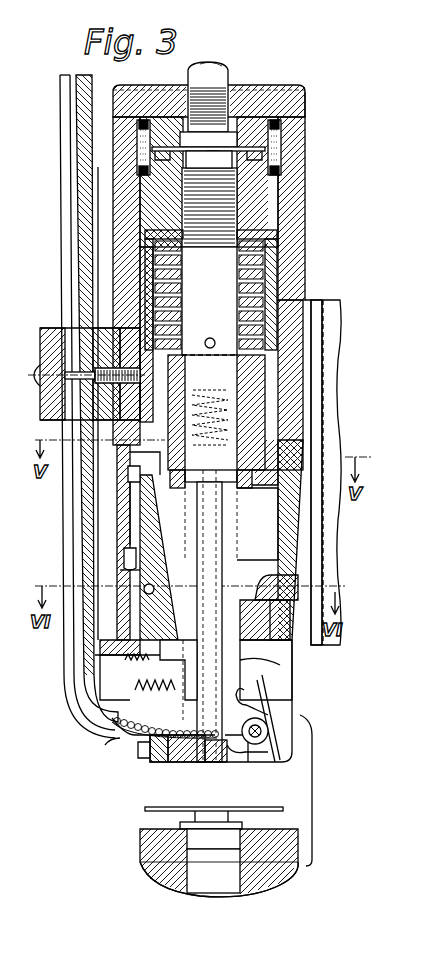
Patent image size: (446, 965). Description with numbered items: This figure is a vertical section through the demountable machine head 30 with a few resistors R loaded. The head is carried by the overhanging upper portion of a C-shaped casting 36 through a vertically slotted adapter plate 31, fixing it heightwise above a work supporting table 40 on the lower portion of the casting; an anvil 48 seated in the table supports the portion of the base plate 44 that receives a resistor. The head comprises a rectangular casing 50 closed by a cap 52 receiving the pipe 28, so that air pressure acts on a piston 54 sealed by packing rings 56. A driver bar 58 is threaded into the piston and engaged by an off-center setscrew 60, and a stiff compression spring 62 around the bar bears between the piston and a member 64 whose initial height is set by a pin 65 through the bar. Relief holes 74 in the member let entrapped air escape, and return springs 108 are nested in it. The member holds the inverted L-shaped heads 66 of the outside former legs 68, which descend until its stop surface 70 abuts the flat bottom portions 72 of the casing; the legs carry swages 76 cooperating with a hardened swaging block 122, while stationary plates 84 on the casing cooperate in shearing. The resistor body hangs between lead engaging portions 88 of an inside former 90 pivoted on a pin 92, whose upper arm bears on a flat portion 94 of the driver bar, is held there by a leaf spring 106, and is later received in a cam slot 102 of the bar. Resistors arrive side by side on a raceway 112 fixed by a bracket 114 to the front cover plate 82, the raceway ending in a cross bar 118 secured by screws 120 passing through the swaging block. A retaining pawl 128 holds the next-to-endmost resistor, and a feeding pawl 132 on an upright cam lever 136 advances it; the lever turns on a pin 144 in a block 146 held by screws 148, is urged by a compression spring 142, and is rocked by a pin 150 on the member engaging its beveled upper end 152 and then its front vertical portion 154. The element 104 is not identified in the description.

The pipe 28 is at (226, 68).
The setscrew 60 is at (220, 150).
The cap 52 is at (305, 95).
The packing rings 56 is at (280, 175).
The machine head 30 is at (310, 185).
The raceway 112 is at (60, 200).
The driver bar 58 is at (182, 200).
The casing 50 is at (118, 228).
The piston 54 is at (280, 205).
The compression spring 62 is at (278, 242).
The adapter plate 31 is at (312, 300).
The C-shaped casting 36 is at (332, 300).
The bracket 114 is at (100, 328).
The relief holes 74 is at (212, 335).
The compression springs 108 is at (218, 398).
The member 64 is at (272, 395).
The L-shaped heads 66 is at (210, 470).
The pin 150 is at (140, 455).
The beveled upper end 152 is at (135, 470).
The front vertical portion 154 is at (138, 510).
The front cover plate 82 is at (125, 520).
The cam lever 136 is at (128, 552).
The block 146 is at (125, 572).
The pin 144 is at (150, 585).
The stop surface 70 is at (262, 488).
The pin 65 is at (255, 510).
The outside former legs 68 is at (228, 540).
The flat bottom portions 72 is at (290, 575).
The lower block 104 is at (275, 615).
The screws 148 is at (100, 640).
The swages 76 is at (203, 652).
The cam slot 102 is at (250, 655).
The stationary plates 84 is at (258, 678).
The flat vertical portion 94 is at (270, 690).
The compression spring 142 is at (135, 685).
The retaining pawl 128 is at (110, 722).
The resistor R is at (118, 740).
The screws 120 is at (140, 755).
The cross bar 118 is at (158, 763).
The swaging block 122 is at (180, 763).
The lead engaging portions 88 is at (210, 763).
The feeding pawl 132 is at (228, 763).
The inside former 90 is at (238, 763).
The pin 92 is at (265, 755).
The leaf spring 106 is at (285, 705).
The base plate 44 is at (148, 808).
The anvil 48 is at (182, 826).
The work supporting table 40 is at (140, 852).